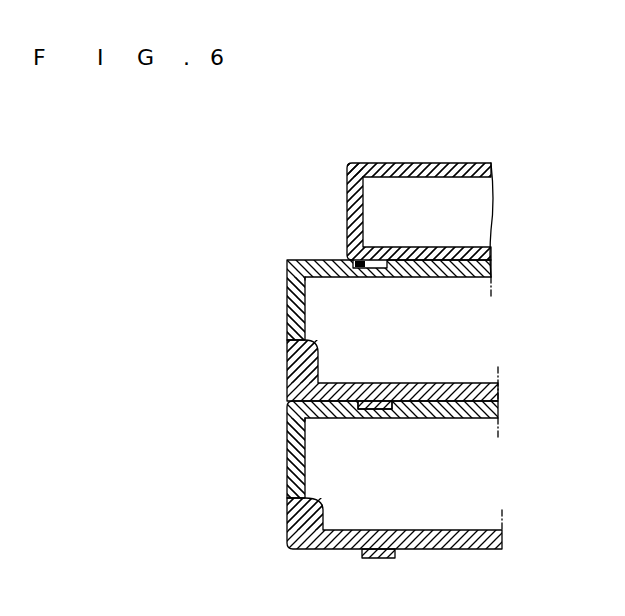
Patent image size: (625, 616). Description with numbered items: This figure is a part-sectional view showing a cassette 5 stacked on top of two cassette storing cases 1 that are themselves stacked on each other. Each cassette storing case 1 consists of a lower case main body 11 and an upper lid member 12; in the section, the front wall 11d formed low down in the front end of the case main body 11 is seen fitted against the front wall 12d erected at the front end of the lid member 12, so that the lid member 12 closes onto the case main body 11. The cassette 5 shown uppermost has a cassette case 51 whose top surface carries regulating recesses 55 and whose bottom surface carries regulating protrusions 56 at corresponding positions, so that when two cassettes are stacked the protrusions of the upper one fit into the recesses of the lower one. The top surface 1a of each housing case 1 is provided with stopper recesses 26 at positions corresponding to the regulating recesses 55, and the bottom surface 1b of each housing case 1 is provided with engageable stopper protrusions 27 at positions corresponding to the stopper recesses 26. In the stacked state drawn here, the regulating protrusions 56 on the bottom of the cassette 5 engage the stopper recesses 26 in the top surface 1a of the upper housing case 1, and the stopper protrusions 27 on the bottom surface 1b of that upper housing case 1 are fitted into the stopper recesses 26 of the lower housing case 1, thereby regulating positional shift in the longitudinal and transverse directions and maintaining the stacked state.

The cassette storing case 1 is at (364, 405).
The top surface of housing case 1a is at (322, 260).
The bottom surface of housing case 1b is at (293, 404).
The cassette 5 is at (400, 290).
The cassette case 51 is at (401, 171).
The regulating recess 55 is at (350, 162).
The regulating protrusion 56 is at (378, 258).
The case main body 11 is at (364, 461).
The front wall of case main body 11d is at (310, 353).
The lid member 12 is at (353, 379).
The front wall of lid member 12d is at (296, 300).
The stopper recess 26 is at (366, 268).
The stopper protrusion 27 is at (364, 400).